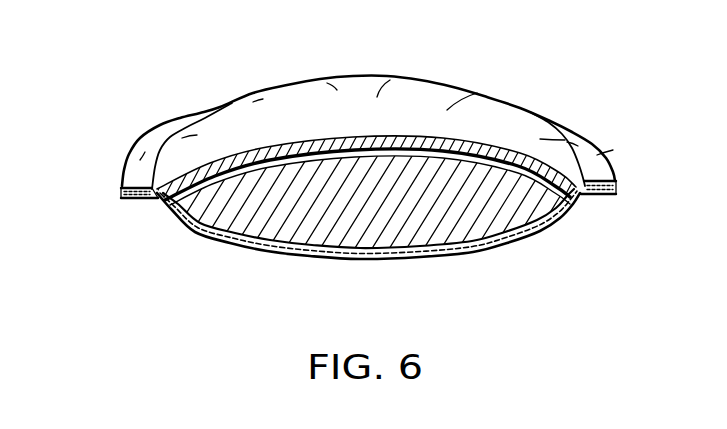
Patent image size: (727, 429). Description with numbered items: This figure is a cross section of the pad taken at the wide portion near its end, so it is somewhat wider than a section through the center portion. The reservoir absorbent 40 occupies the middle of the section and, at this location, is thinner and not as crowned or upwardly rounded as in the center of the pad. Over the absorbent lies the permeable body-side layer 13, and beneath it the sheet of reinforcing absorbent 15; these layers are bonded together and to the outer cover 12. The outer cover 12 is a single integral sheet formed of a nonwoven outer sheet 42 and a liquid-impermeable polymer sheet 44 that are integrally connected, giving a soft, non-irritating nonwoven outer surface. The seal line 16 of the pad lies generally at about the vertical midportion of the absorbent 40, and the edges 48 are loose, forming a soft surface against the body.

The outer cover 12 is at (377, 260).
The permeable body-side layer 13 is at (315, 97).
The sheet of reinforcing absorbent 15 is at (508, 158).
The seal line 16 is at (590, 167).
The reservoir absorbent 40 is at (513, 215).
The nonwoven outer sheet 42 is at (190, 236).
The liquid-impermeable polymer sheet 44 is at (127, 194).
The edges 48 is at (155, 142).